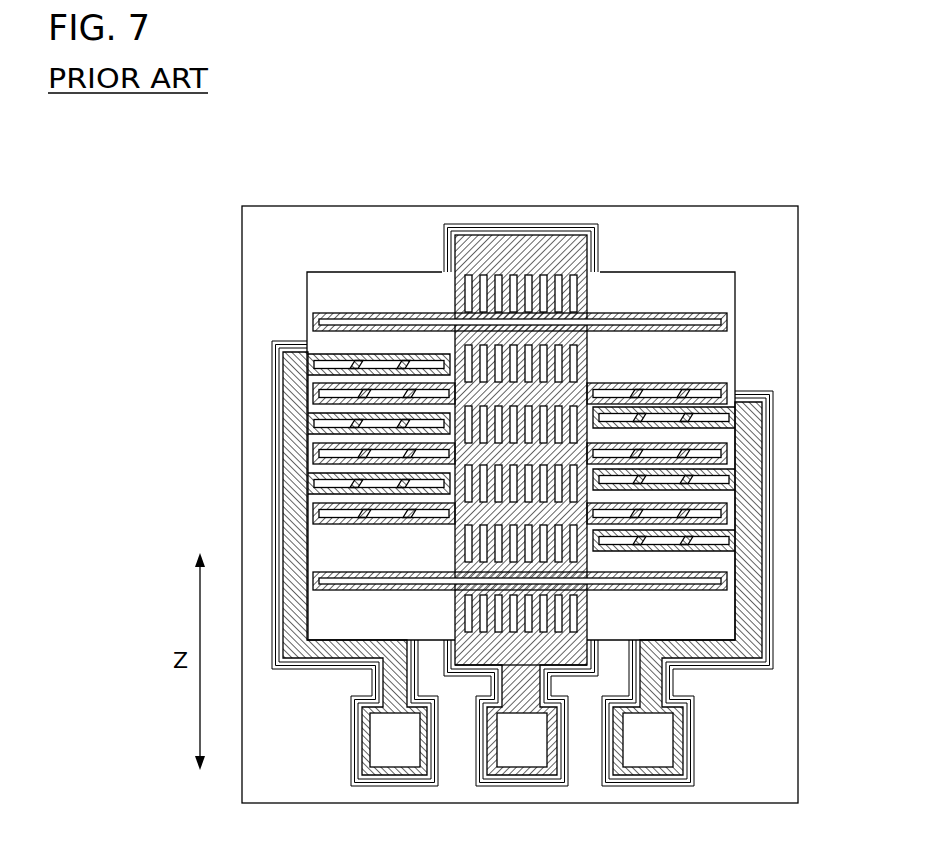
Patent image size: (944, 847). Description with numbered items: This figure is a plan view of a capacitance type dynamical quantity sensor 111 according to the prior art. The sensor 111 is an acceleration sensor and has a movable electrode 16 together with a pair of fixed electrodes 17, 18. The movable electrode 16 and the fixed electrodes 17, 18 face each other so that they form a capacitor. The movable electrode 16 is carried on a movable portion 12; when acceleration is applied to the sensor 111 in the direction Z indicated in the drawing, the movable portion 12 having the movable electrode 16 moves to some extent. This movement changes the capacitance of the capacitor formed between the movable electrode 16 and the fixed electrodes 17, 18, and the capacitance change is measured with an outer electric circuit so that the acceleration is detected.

The dynamical quantity sensor 111 is at (210, 184).
The movable portion 12 is at (523, 237).
The movable electrode 16 is at (283, 379).
The fixed electrode 17 is at (360, 354).
The fixed electrode 18 is at (695, 430).